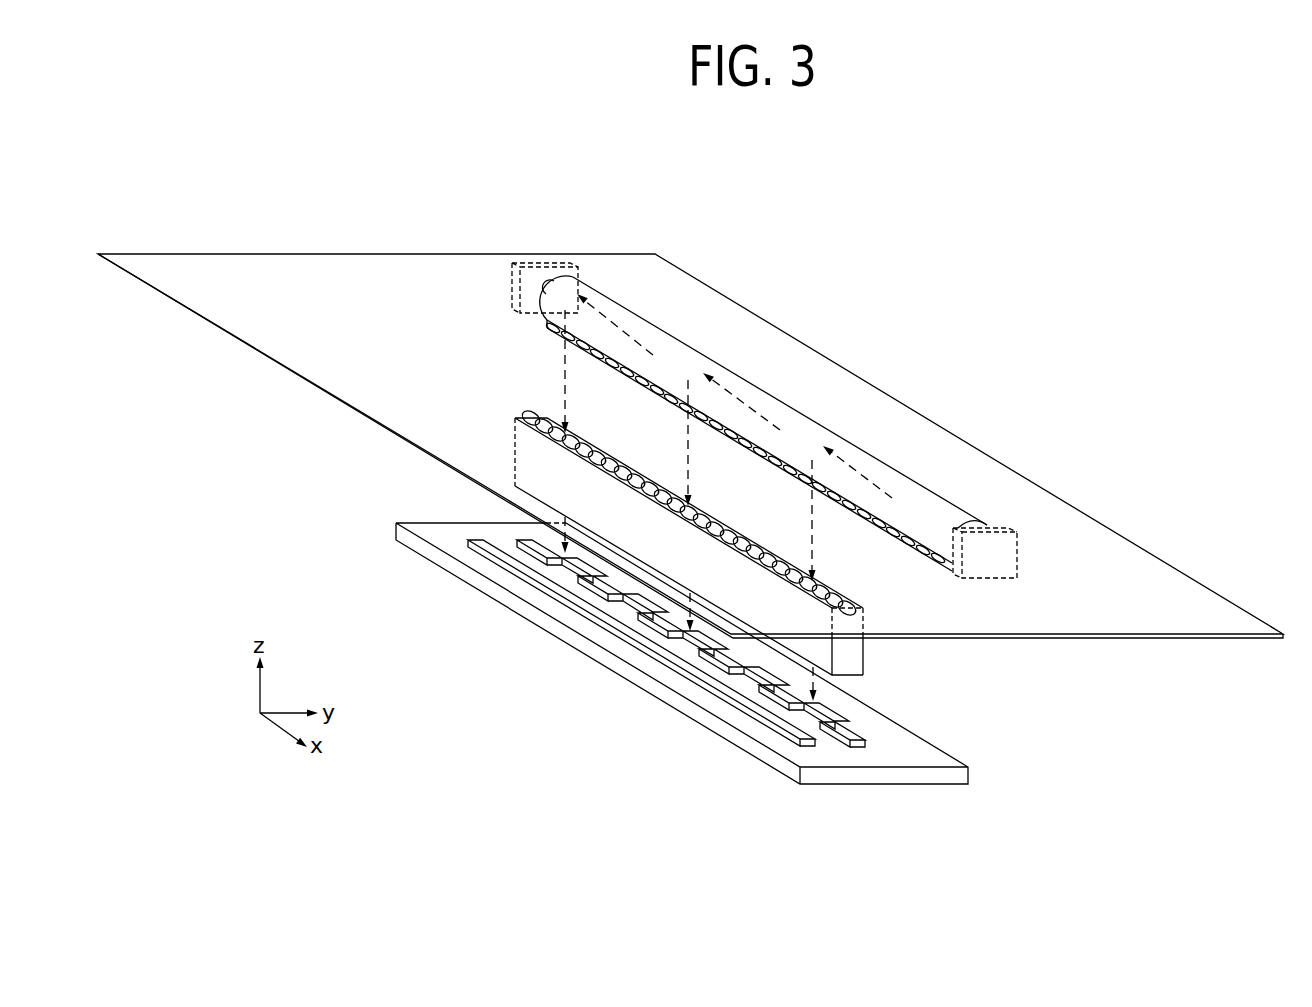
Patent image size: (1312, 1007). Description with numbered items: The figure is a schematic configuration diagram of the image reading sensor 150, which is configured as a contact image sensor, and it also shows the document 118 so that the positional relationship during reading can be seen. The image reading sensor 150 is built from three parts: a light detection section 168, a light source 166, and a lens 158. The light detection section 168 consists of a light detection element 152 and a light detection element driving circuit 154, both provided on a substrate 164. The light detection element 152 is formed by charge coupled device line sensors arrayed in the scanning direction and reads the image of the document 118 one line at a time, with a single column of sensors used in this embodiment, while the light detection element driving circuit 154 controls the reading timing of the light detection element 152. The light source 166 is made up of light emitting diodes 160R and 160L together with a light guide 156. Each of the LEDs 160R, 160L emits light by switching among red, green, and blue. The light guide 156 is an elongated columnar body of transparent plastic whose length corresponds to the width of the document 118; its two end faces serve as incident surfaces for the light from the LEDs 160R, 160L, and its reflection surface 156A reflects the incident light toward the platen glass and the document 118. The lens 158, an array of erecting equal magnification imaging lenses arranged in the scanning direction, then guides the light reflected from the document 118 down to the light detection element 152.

The document 118 is at (828, 370).
The image reading sensor 150 is at (330, 502).
The light detection element 152 is at (858, 746).
The light detection element driving circuit 154 is at (765, 722).
The light guide 156 is at (804, 437).
The reflection surface 156A is at (913, 545).
The lens 158 is at (850, 660).
The light emitting diode 160L is at (533, 264).
The light emitting diode 160R is at (1017, 578).
The substrate 164 is at (632, 675).
The light source 166 is at (838, 420).
The light detection section 168 is at (729, 682).